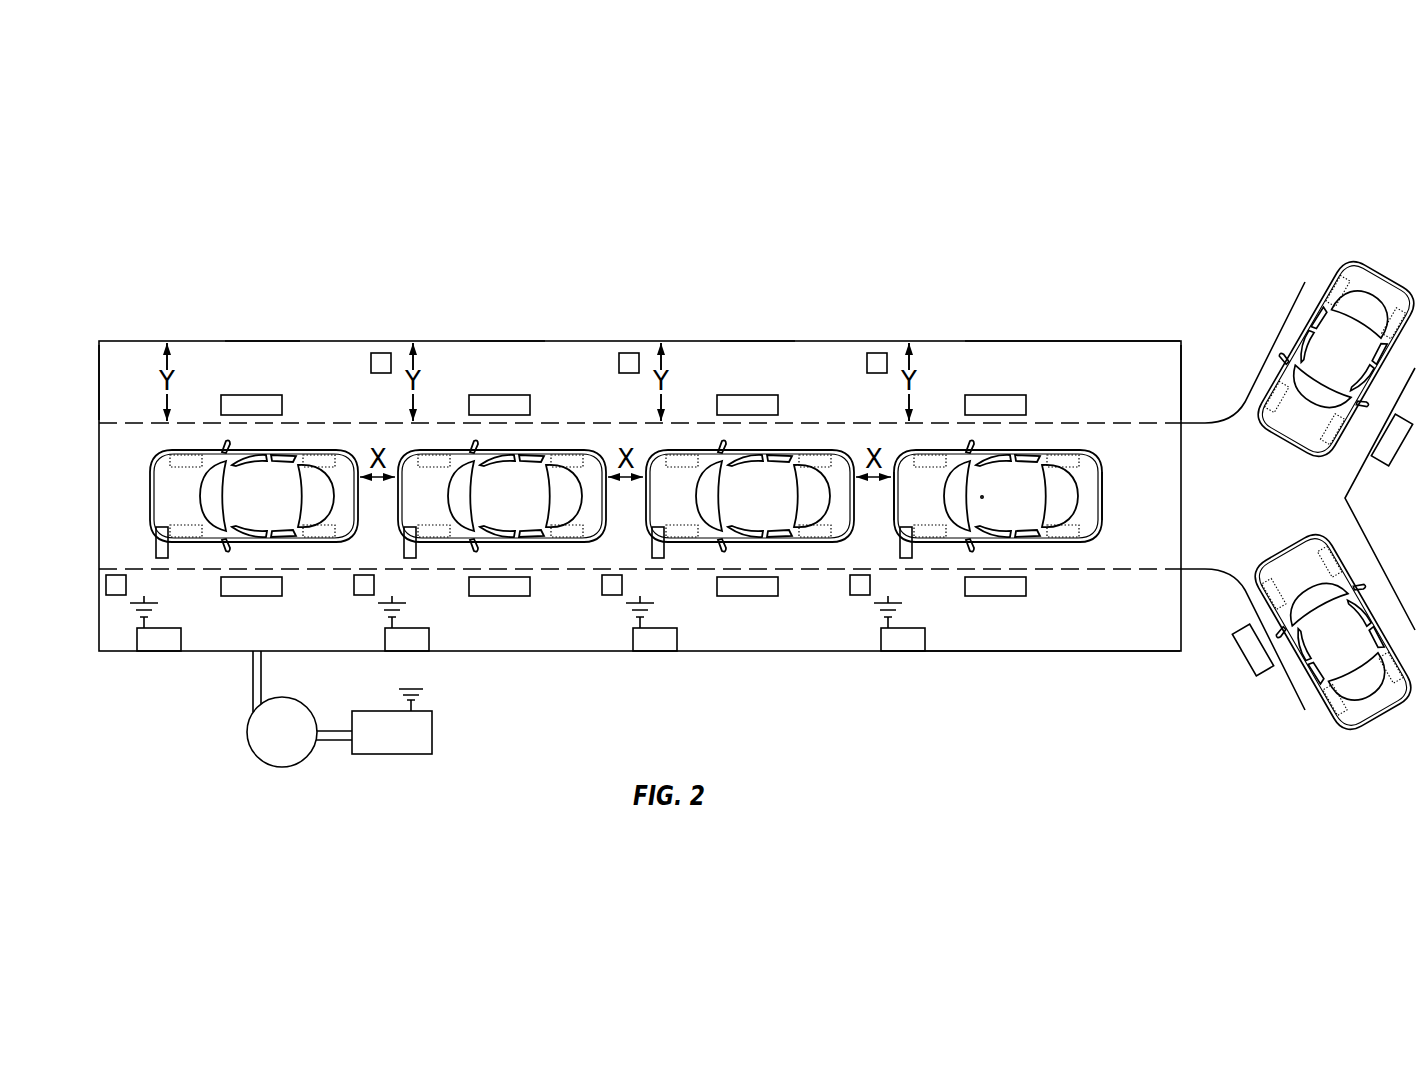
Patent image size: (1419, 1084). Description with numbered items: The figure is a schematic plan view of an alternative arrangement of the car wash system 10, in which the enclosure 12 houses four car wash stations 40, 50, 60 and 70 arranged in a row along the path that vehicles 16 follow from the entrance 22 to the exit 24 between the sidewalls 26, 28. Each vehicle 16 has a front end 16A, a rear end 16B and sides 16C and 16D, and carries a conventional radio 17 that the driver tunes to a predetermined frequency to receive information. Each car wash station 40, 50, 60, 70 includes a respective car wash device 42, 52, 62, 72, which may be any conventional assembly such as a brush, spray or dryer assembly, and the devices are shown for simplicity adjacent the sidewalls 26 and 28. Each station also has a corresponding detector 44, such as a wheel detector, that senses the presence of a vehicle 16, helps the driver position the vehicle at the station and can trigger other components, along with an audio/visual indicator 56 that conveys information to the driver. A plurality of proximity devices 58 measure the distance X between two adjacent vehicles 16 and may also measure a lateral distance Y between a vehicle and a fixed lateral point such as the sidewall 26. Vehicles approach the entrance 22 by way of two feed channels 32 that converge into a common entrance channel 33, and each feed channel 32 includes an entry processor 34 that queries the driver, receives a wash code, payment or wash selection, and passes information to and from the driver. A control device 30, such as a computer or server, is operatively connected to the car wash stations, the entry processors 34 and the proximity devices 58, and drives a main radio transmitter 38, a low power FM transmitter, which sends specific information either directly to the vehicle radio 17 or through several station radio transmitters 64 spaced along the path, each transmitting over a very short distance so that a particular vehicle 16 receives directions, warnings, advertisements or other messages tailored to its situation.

The car wash system 10 is at (147, 266).
The enclosure 12 is at (1113, 336).
The vehicle 16 is at (360, 507).
The front end 16A is at (894, 514).
The rear end 16B is at (1104, 499).
The side 16C is at (1020, 452).
The side 16D is at (1044, 539).
The radio 17 is at (984, 497).
The entrance 22 is at (1181, 361).
The exit 24 is at (99, 360).
The sidewall 26 is at (1041, 341).
The sidewall 28 is at (1026, 652).
The control device 30 is at (245, 731).
The feed channel 32 is at (1288, 479).
The common entrance channel 33 is at (1238, 507).
The entry processor 34 is at (1389, 458).
The main radio transmitter 38 is at (362, 758).
The first car wash station 40 is at (972, 365).
The car wash device 42 is at (1010, 400).
The detector 44 is at (163, 548).
The second car wash station 50 is at (728, 366).
The car wash device 52 is at (762, 400).
The audio/visual indicator 56 is at (116, 596).
The proximity device 58 is at (382, 361).
The third car wash station 60 is at (480, 366).
The car wash device 62 is at (514, 400).
The station radio transmitter 64 is at (152, 640).
The fourth car wash station 70 is at (232, 365).
The car wash device 72 is at (266, 400).